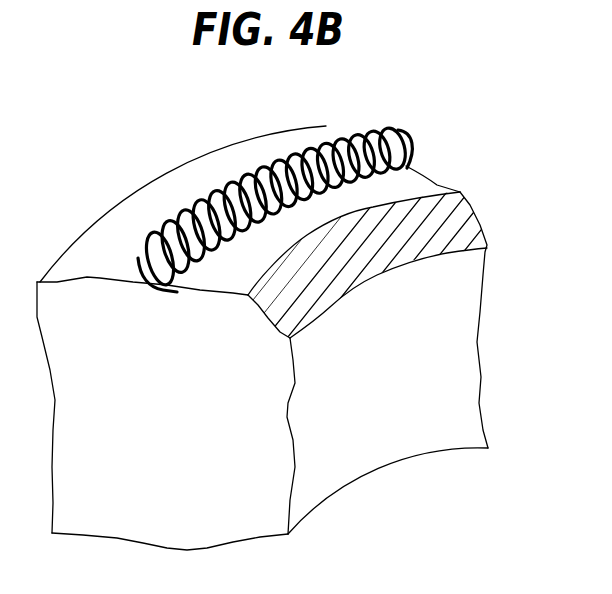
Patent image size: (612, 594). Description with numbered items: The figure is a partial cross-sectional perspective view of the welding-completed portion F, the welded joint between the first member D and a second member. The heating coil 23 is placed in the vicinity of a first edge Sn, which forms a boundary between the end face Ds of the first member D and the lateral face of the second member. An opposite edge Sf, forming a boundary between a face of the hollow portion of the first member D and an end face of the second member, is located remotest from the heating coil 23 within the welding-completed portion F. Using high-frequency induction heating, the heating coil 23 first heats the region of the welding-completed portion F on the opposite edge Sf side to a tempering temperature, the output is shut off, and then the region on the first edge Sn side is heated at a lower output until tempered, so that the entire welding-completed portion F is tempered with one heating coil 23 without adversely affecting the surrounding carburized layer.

The heating coil 23 is at (404, 133).
The first member D is at (63, 247).
The end face of the first member Ds is at (133, 224).
The first edge Sn is at (413, 203).
The welding-completed portion F is at (405, 235).
The opposite edge Sf is at (420, 259).